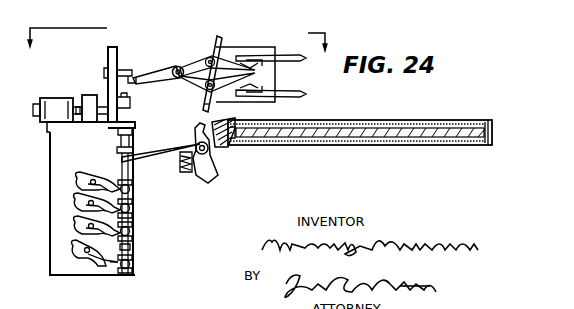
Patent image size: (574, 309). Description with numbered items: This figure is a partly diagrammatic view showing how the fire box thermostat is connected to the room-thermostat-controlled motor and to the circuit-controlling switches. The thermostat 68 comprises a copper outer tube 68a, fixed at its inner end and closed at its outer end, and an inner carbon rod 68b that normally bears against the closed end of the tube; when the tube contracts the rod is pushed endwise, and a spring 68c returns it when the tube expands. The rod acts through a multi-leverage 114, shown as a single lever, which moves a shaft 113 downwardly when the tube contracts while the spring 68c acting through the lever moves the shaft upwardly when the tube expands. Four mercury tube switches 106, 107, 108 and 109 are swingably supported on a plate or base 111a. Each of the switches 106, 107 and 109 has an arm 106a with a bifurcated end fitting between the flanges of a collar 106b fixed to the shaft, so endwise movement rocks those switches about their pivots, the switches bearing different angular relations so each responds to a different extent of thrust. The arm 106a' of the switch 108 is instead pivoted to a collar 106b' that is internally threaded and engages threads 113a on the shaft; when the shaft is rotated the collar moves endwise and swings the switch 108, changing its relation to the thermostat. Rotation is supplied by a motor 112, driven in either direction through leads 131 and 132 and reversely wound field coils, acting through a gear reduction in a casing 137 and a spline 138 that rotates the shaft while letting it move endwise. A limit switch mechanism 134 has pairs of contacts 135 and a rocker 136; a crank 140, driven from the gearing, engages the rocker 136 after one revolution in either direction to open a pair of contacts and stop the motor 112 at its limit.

The thermostat 68 is at (360, 124).
The outer tube 68a is at (447, 113).
The rod 68b is at (404, 138).
The spring 68c is at (189, 159).
The control switch 106 is at (120, 168).
The arm 106a is at (108, 281).
The arm 106a' is at (151, 223).
The collar 106b is at (151, 227).
The collar 106b' is at (151, 229).
The control switch 107 is at (80, 208).
The control switch 108 is at (77, 236).
The control switch 109 is at (80, 260).
The plate or base 111a is at (50, 149).
The motor 112 is at (70, 97).
The shaft 113 is at (180, 162).
The threads 113a is at (130, 250).
The multi-leverage 114 is at (148, 154).
The lead 131 is at (206, 104).
The lead 132 is at (214, 40).
The limit switch mechanism 134 is at (219, 52).
The contacts 135 is at (258, 56).
The rocker 136 is at (135, 77).
The casing 137 is at (88, 95).
The spline 138 is at (130, 102).
The crank 140 is at (133, 69).